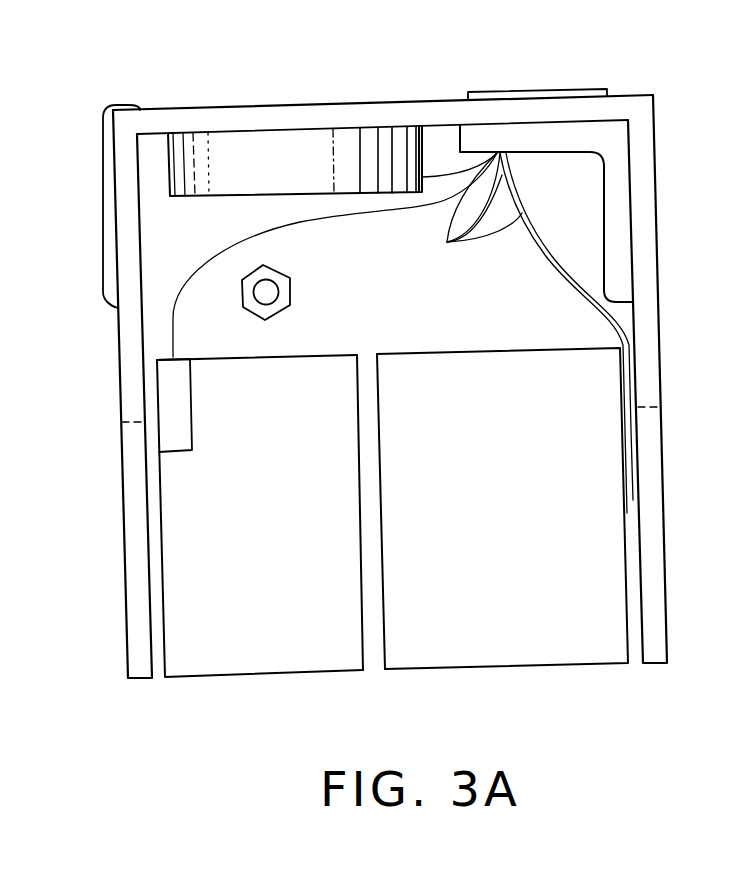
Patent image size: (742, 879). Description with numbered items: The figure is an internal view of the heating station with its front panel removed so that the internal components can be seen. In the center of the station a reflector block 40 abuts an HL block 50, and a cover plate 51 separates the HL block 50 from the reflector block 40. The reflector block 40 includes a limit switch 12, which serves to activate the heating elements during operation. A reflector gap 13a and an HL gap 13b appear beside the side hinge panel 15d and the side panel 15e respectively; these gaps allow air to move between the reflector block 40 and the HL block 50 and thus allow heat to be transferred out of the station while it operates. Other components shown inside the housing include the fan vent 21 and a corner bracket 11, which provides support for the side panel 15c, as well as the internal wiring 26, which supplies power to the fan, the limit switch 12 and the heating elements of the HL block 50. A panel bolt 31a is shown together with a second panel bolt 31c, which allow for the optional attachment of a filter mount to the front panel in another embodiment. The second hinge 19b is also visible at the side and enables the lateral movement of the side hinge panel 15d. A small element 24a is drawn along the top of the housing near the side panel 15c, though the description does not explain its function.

The corner bracket 11 is at (620, 220).
The limit switch 12 is at (178, 405).
The reflector gap 13a is at (162, 680).
The HL gap 13b is at (635, 664).
The side panel 15c is at (243, 118).
The side hinge panel 15d is at (130, 622).
The side panel 15e is at (656, 560).
The second hinge 19b is at (105, 172).
The fan vent 21 is at (267, 180).
The projection 24a is at (572, 93).
The internal wiring 26 is at (448, 243).
The panel bolt 31a is at (268, 286).
The second panel bolt 31c is at (282, 310).
The reflector block 40 is at (232, 665).
The HL block 50 is at (508, 657).
The cover plate 51 is at (377, 660).